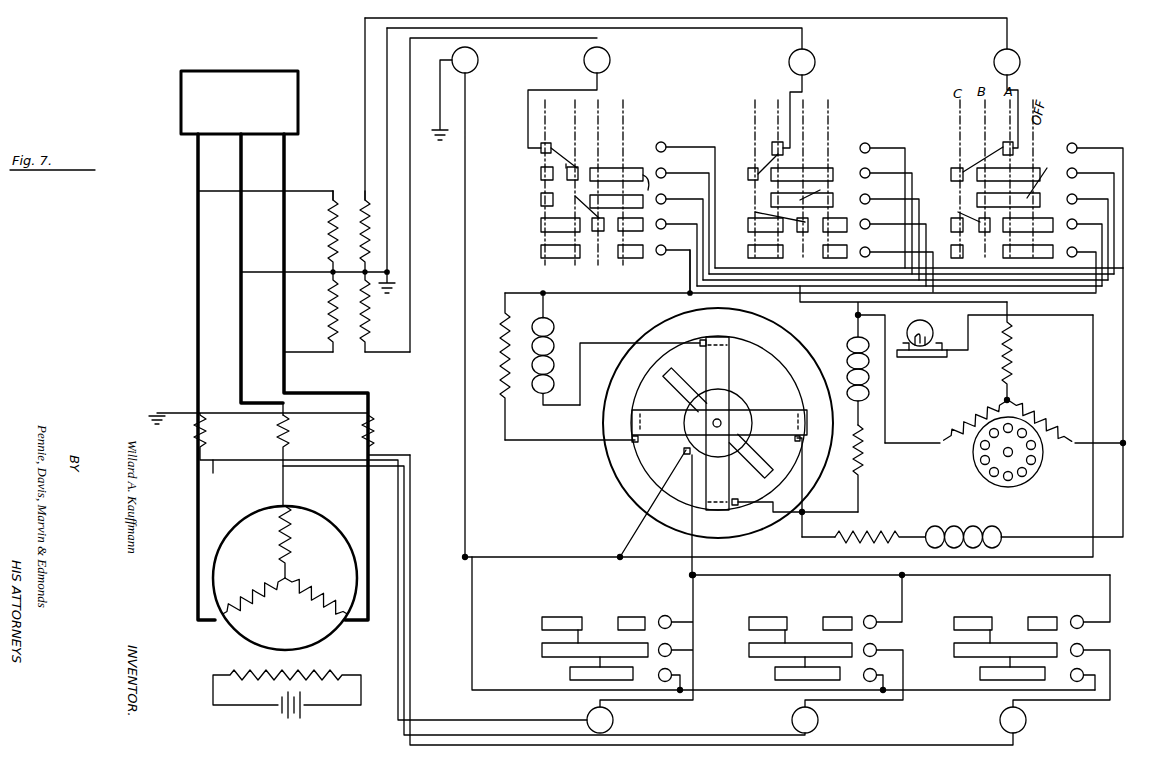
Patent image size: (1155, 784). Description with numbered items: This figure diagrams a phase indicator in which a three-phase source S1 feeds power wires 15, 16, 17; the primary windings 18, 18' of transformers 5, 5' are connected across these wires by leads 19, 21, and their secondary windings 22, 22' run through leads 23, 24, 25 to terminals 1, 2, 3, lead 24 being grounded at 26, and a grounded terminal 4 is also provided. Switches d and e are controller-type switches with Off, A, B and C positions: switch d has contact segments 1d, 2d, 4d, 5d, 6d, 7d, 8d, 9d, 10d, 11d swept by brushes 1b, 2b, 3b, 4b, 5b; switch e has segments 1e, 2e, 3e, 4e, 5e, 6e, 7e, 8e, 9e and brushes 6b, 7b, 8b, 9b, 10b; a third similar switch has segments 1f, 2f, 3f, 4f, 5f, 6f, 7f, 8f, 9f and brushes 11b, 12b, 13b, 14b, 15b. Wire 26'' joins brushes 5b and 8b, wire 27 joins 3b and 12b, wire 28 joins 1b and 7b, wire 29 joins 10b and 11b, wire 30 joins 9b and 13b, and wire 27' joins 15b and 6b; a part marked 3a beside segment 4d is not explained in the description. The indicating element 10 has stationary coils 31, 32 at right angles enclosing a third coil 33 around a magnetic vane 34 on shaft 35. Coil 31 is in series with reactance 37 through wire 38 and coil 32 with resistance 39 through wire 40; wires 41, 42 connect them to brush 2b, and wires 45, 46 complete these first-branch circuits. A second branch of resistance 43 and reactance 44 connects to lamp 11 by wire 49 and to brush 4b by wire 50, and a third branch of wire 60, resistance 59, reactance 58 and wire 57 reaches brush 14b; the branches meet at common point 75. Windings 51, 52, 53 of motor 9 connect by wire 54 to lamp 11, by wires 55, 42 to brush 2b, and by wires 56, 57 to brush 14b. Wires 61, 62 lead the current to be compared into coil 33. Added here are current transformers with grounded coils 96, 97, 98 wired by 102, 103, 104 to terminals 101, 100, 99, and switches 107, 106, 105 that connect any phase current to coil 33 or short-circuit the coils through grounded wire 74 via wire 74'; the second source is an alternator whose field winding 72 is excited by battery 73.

The terminal 1 is at (610, 60).
The terminal 2 is at (815, 55).
The terminal 3 is at (1017, 53).
The grounded terminal 4 is at (477, 67).
The transformer 5 is at (381, 366).
The transformer 5' is at (346, 175).
The motor 9 is at (970, 471).
The phase indicating element 10 is at (600, 483).
The incandescent lamp 11 is at (912, 360).
The power wire 15 is at (197, 165).
The power wire 16 is at (240, 150).
The power wire 17 is at (284, 154).
The primary winding 18 is at (318, 312).
The primary winding 18' is at (317, 231).
The lead 19 is at (266, 193).
The lead 21 is at (312, 362).
The secondary winding 22 is at (377, 312).
The secondary winding 22' is at (398, 145).
The lead 23 is at (554, 40).
The lead 24 is at (622, 27).
The lead 25 is at (699, 18).
The ground connection 26 is at (391, 160).
The wire 26'' is at (911, 295).
The wire 27 is at (905, 302).
The wire 27' is at (1110, 355).
The wire 28 is at (899, 309).
The wire 29 is at (1028, 293).
The wire 30 is at (1063, 290).
The stationary coil 31 is at (729, 372).
The stationary coil 32 is at (774, 411).
The third coil 33 is at (750, 396).
The magnetic vane 34 is at (686, 362).
The shaft 35 is at (713, 423).
The reactance 37 is at (553, 340).
The wire 38 is at (612, 342).
The resistance 39 is at (496, 351).
The wire 40 is at (544, 438).
The wire 41 is at (592, 294).
The wire 42 is at (688, 292).
The resistance 43 is at (863, 457).
The reactance 44 is at (848, 354).
The wire 45 is at (742, 502).
The wire 46 is at (804, 478).
The wire 49 is at (890, 298).
The wire 50 is at (830, 300).
The motor winding 51 is at (960, 416).
The motor winding 52 is at (1013, 350).
The motor winding 53 is at (1049, 414).
The wire 54 is at (908, 441).
The wire 55 is at (938, 298).
The wire 56 is at (1098, 439).
The wire 57 is at (1123, 505).
The reactance 58 is at (947, 533).
The resistance 59 is at (876, 534).
The wire 60 is at (802, 542).
The wire 61 is at (625, 536).
The wire 62 is at (688, 540).
The field winding 72 is at (254, 676).
The battery 73 is at (278, 710).
The grounded wire 74 is at (762, 437).
The wire 74' is at (783, 623).
The common point 75 is at (816, 506).
The current transformer coil 96 is at (187, 443).
The current transformer coil 97 is at (278, 441).
The current transformer coil 98 is at (380, 442).
The terminal 99 is at (613, 720).
The terminal 100 is at (818, 720).
The terminal 101 is at (1020, 728).
The wire 102 is at (452, 748).
The wire 103 is at (426, 742).
The wire 104 is at (428, 719).
The switch 105 is at (562, 606).
The switch 106 is at (780, 609).
The switch 107 is at (987, 609).
The source of polyphase current S1 is at (261, 578).
The switch d is at (647, 132).
The switch e is at (851, 130).
The brush 1b is at (673, 262).
The brush 2b is at (676, 246).
The brush 3b is at (679, 230).
The brush 4b is at (682, 214).
The brush 5b is at (685, 198).
The brush 6b is at (896, 262).
The brush 7b is at (893, 246).
The brush 8b is at (889, 230).
The brush 9b is at (886, 214).
The brush 10b is at (882, 198).
The brush 11b is at (1088, 261).
The brush 12b is at (1088, 245).
The brush 13b is at (1088, 229).
The brush 14b is at (1090, 213).
The brush 15b is at (1095, 197).
The contact 3a is at (646, 173).
The contact segment 1d is at (630, 258).
The contact segment 2d is at (614, 236).
The contact segment 4d is at (610, 170).
The contact segment 5d is at (590, 236).
The contact segment 6d is at (541, 251).
The contact segment 7d is at (541, 225).
The contact segment 8d is at (560, 148).
The contact segment 9d is at (541, 199).
The contact segment 10d is at (541, 174).
The contact segment 11d is at (541, 148).
The contact segment 1e is at (833, 249).
The contact segment 2e is at (833, 222).
The contact segment 3e is at (820, 191).
The contact segment 4e is at (800, 170).
The contact segment 5e is at (801, 234).
The contact segment 6e is at (748, 252).
The contact segment 7e is at (748, 226).
The contact segment 8e is at (777, 142).
The contact segment 9e is at (748, 172).
The contact segment 1f is at (1036, 248).
The contact segment 2f is at (1036, 220).
The contact segment 3f is at (1047, 177).
The contact segment 4f is at (1039, 168).
The contact segment 5f is at (983, 234).
The contact segment 6f is at (951, 252).
The contact segment 7f is at (951, 226).
The contact segment 8f is at (988, 146).
The contact segment 9f is at (951, 174).